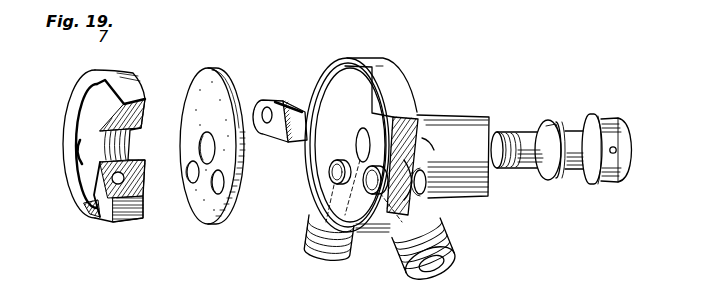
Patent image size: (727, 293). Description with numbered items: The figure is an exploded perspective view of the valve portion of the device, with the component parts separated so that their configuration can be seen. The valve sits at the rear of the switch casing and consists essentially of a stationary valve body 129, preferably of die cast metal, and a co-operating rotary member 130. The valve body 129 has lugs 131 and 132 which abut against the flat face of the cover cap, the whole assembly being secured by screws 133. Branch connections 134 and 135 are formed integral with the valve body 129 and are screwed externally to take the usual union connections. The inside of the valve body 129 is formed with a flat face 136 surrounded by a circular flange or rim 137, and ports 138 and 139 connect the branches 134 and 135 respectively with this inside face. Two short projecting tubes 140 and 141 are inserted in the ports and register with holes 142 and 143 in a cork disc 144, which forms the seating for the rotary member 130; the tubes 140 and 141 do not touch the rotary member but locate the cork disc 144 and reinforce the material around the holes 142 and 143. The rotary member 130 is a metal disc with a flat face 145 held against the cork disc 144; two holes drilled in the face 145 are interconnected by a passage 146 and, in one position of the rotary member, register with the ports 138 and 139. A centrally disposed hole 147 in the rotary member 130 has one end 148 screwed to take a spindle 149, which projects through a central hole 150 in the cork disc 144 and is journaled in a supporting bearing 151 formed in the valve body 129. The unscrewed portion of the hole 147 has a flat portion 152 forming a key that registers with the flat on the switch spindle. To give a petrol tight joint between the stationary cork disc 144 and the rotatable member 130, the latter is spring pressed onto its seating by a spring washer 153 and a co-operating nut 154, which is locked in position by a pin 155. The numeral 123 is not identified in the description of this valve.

The element 123 is at (372, 0).
The screws 133 is at (303, 5).
The stationary valve body 129 is at (392, 100).
The rotary member 130 is at (120, 78).
The lug 131 is at (430, 183).
The lug 132 is at (290, 94).
The branch connection 134 is at (328, 252).
The branch connection 135 is at (432, 263).
The flat face 136 is at (338, 144).
The circular flange or rim 137 is at (342, 68).
The port 138 is at (329, 174).
The port 139 is at (396, 192).
The short projecting tube 140 is at (364, 182).
The short projecting tube 141 is at (392, 198).
The hole 142 is at (187, 174).
The hole 143 is at (219, 196).
The cork disc 144 is at (206, 86).
The flat face 145 is at (131, 127).
The passage 146 is at (125, 182).
The centrally disposed hole 147 is at (76, 166).
The screwed end 148 is at (127, 139).
The spindle 149 is at (535, 160).
The central hole 150 is at (210, 152).
The supporting bearing 151 is at (370, 140).
The flat portion 152 is at (80, 145).
The spring washer 153 is at (551, 128).
The nut 154 is at (612, 134).
The pin 155 is at (613, 158).